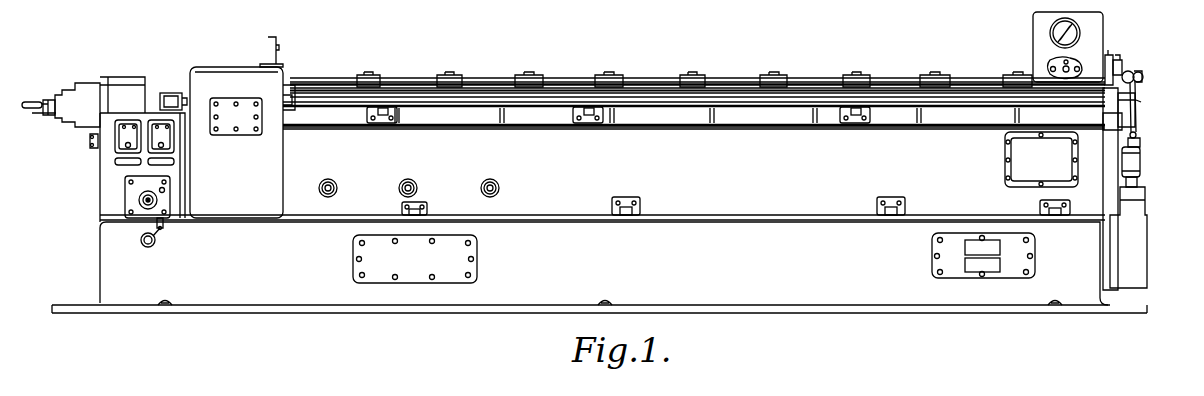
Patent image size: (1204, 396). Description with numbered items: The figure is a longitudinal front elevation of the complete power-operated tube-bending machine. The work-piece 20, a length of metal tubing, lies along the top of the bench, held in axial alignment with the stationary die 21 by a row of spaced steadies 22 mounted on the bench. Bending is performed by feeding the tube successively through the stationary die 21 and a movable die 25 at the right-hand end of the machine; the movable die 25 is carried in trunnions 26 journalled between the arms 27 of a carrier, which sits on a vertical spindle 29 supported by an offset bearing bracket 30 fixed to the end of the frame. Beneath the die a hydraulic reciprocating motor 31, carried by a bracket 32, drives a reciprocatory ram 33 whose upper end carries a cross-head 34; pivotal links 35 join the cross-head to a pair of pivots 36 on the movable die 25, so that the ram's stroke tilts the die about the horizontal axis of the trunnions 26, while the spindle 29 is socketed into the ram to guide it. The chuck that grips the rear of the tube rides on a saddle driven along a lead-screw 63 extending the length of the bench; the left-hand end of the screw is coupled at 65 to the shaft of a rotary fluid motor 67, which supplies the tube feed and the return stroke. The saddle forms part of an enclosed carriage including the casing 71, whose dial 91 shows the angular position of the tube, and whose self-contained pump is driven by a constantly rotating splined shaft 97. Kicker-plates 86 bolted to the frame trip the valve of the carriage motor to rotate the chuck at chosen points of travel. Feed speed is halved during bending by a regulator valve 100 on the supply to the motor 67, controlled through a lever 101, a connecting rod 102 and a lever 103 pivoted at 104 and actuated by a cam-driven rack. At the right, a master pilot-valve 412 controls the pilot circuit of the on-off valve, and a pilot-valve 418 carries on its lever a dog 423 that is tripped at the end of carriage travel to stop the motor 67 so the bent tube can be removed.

The work-piece 20 is at (485, 79).
The stationary die 21 is at (1119, 70).
The steadies 22 is at (440, 74).
The movable die 25 is at (1141, 75).
The trunnions 26 is at (1130, 73).
The arms 27 is at (1137, 90).
The vertical spindle 29 is at (1137, 135).
The offset bearing bracket 30 is at (1136, 120).
The hydraulic reciprocating motor 31 is at (1145, 192).
The bracket 32 is at (1103, 195).
The reciprocatory ram 33 is at (1141, 160).
The cross-head 34 is at (1141, 143).
The pivotal links 35 is at (1142, 102).
The pivots 36 is at (1143, 80).
The lead-screw 63 is at (560, 95).
The coupling 65 is at (172, 92).
The rotary fluid motor 67 is at (78, 92).
The casing 71 is at (209, 78).
The kicker-plates 86 is at (384, 124).
The dial 91 is at (278, 56).
The splined shaft 97 is at (770, 130).
The regulator valve 100 is at (137, 204).
The lever 101 is at (165, 190).
The connecting rod 102 is at (165, 225).
The lever 103 is at (156, 236).
The pivot 104 is at (141, 240).
The master pilot-valve 412 is at (1110, 54).
The pilot-valve 418 is at (1060, 60).
The dog 423 is at (1052, 66).